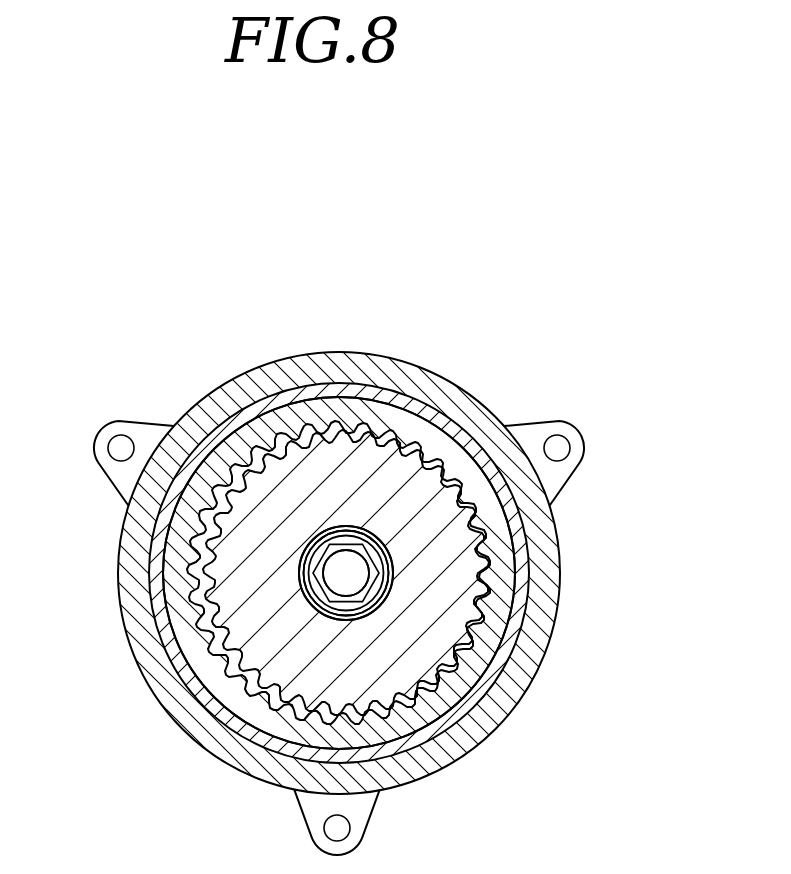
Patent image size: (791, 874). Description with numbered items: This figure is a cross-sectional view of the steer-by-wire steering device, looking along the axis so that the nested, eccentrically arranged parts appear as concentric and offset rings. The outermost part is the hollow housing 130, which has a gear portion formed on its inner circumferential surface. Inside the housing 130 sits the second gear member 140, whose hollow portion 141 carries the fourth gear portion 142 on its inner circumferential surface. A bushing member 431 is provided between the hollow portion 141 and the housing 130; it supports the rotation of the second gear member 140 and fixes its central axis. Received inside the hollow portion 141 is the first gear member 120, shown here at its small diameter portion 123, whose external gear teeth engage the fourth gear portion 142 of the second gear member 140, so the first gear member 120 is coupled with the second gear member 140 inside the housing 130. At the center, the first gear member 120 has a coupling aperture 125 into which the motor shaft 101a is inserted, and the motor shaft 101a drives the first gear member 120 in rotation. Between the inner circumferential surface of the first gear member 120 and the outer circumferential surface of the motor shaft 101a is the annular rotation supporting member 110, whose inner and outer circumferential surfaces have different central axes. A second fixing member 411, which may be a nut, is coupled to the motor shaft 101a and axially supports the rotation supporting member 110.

The housing 130 is at (301, 365).
The bushing member 431 is at (333, 388).
The second gear member 140 is at (360, 575).
The hollow portion 141 is at (497, 527).
The fourth gear portion 142 is at (487, 545).
The first gear member 120 is at (355, 575).
The small diameter portion 123 is at (443, 620).
The coupling aperture 125 is at (303, 575).
The rotation supporting member 110 is at (337, 610).
The second fixing member 411 is at (300, 590).
The motor shaft 101a is at (345, 575).